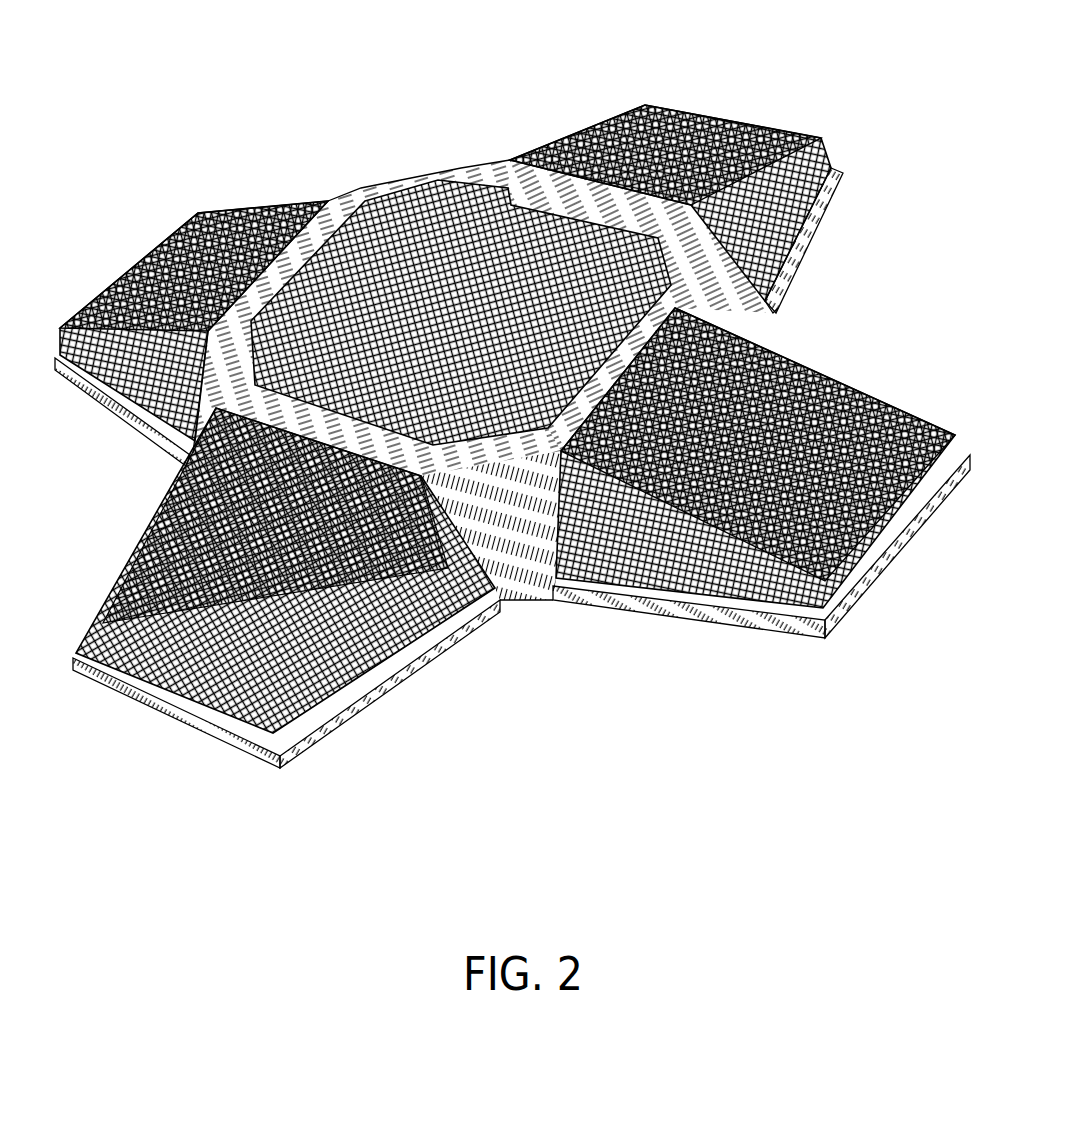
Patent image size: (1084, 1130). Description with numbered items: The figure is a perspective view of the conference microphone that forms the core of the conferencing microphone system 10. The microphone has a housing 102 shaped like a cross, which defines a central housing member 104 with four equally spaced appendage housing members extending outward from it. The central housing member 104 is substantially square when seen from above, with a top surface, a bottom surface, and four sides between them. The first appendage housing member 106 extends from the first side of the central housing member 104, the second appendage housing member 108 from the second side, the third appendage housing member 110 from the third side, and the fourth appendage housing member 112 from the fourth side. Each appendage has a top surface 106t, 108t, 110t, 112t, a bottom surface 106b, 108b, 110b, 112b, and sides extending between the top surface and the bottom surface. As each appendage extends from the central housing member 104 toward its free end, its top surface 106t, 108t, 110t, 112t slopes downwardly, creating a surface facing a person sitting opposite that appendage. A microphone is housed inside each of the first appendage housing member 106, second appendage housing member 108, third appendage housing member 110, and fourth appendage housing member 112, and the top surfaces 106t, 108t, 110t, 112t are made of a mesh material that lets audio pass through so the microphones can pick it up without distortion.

The conferencing microphone system 10 is at (510, 450).
The housing 102 is at (684, 602).
The central housing member 104 is at (400, 200).
The first appendage housing member 106 is at (217, 718).
The top surface of first appendage housing member 106t is at (130, 682).
The bottom surface of first appendage housing member 106b is at (384, 697).
The second appendage housing member 108 is at (133, 257).
The top surface of second appendage housing member 108t is at (251, 212).
The bottom surface of second appendage housing member 108b is at (110, 410).
The third appendage housing member 110 is at (710, 107).
The top surface of third appendage housing member 110t is at (572, 123).
The bottom surface of third appendage housing member 110b is at (828, 208).
The fourth appendage housing member 112 is at (824, 353).
The top surface of fourth appendage housing member 112t is at (893, 390).
The bottom surface of fourth appendage housing member 112b is at (884, 561).